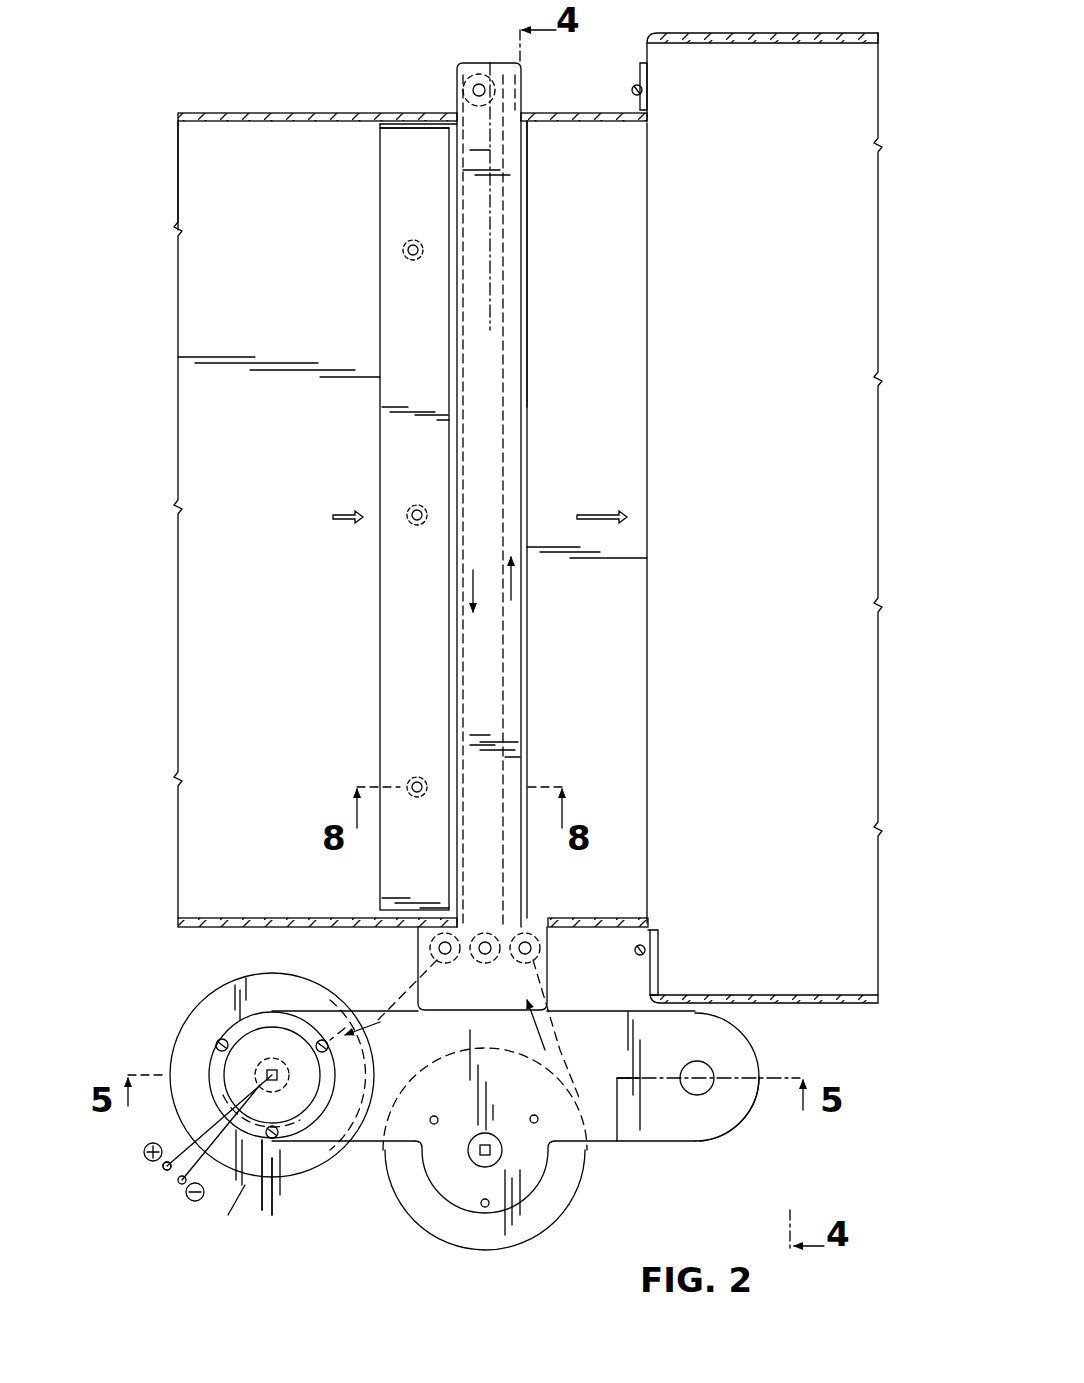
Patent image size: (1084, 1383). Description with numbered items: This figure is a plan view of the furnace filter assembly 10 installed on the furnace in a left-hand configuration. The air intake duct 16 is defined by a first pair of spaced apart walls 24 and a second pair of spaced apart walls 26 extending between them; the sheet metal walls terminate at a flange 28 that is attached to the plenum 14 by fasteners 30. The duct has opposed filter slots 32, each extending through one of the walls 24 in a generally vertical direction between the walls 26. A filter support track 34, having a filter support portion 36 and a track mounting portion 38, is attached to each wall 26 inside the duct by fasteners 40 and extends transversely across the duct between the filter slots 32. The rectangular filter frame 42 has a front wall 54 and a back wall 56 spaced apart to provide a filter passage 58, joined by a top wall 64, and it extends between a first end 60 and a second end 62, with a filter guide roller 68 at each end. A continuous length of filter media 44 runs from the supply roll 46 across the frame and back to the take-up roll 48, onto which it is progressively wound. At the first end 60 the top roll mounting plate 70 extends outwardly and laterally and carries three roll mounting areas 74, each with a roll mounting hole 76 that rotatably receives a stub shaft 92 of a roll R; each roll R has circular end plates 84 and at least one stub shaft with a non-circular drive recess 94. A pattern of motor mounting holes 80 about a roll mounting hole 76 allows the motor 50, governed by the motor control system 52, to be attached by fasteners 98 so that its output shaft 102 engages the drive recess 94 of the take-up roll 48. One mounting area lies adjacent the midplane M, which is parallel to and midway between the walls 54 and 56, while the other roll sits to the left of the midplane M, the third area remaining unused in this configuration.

The furnace filter assembly 10 is at (176, 1234).
The plenum 14 is at (852, 456).
The air intake duct 16 is at (192, 161).
The first pair of spaced apart walls 24 is at (240, 112).
The second pair of spaced apart walls 26 is at (196, 670).
The flange 28 is at (649, 70).
The fasteners 30 is at (636, 96).
The filter slots 32 is at (456, 112).
The filter support track 34 is at (404, 138).
The filter support portion 36 is at (530, 553).
The track mounting portion 38 is at (393, 190).
The fasteners 40 is at (407, 251).
The filter frame 42 is at (470, 638).
The filter media 44 is at (504, 325).
The filter media supply roll 46 is at (447, 1238).
The filter media take-up roll 48 is at (316, 1175).
The motor 50 is at (248, 1035).
The motor control system 52 is at (163, 1178).
The front wall 54 is at (457, 308).
The back wall 56 is at (529, 407).
The filter passage 58 is at (488, 720).
The first end 60 is at (412, 950).
The second end 62 is at (526, 82).
The top wall 64 is at (478, 280).
The filter guide roller 68 is at (470, 65).
The top roll mounting plate 70 is at (743, 1118).
The roll mounting areas 74 is at (330, 1120).
The roll mounting hole 76 is at (699, 1094).
The motor mounting holes 80 is at (432, 1123).
The end plate 84 is at (262, 1150).
The stub shaft 92 is at (473, 1262).
The drive recess 94 is at (322, 1005).
The fasteners 98 is at (218, 1041).
The output shaft 102 is at (278, 1010).
The midplane M is at (491, 230).
The roll R is at (245, 1185).